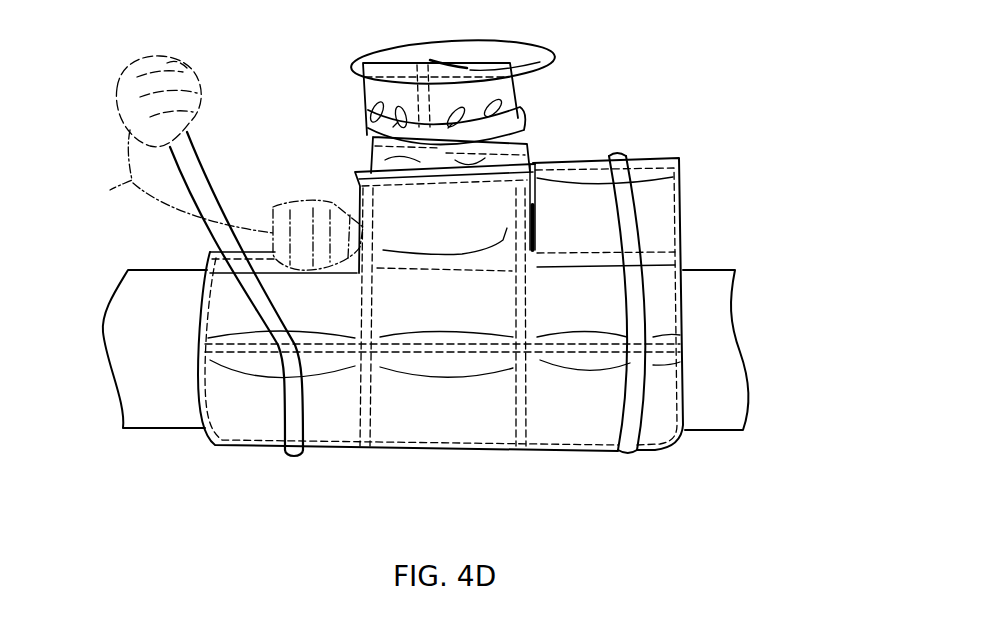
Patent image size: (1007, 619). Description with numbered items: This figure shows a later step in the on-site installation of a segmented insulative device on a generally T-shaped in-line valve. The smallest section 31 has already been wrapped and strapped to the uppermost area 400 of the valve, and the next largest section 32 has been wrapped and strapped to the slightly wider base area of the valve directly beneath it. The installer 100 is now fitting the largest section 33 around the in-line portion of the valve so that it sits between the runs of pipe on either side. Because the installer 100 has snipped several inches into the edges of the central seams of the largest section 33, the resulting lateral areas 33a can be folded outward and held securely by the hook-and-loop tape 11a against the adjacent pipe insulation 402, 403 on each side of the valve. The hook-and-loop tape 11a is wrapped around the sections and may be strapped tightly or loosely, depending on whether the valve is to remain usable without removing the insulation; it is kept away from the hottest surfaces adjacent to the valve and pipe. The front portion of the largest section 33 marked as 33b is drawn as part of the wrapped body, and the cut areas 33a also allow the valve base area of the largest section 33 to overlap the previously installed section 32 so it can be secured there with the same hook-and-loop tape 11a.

The uppermost area of the valve 400 is at (518, 45).
The smallest section 31 is at (366, 103).
The next largest section 32 is at (370, 160).
The hook-and-loop tape 11a is at (523, 122).
The lateral areas of the largest section 33a is at (360, 215).
The front pocket 33b is at (440, 235).
The largest section 33 is at (542, 452).
The installer 100 is at (130, 183).
The adjacent pipe insulation 403 is at (150, 270).
The adjacent pipe insulation 402 is at (700, 268).